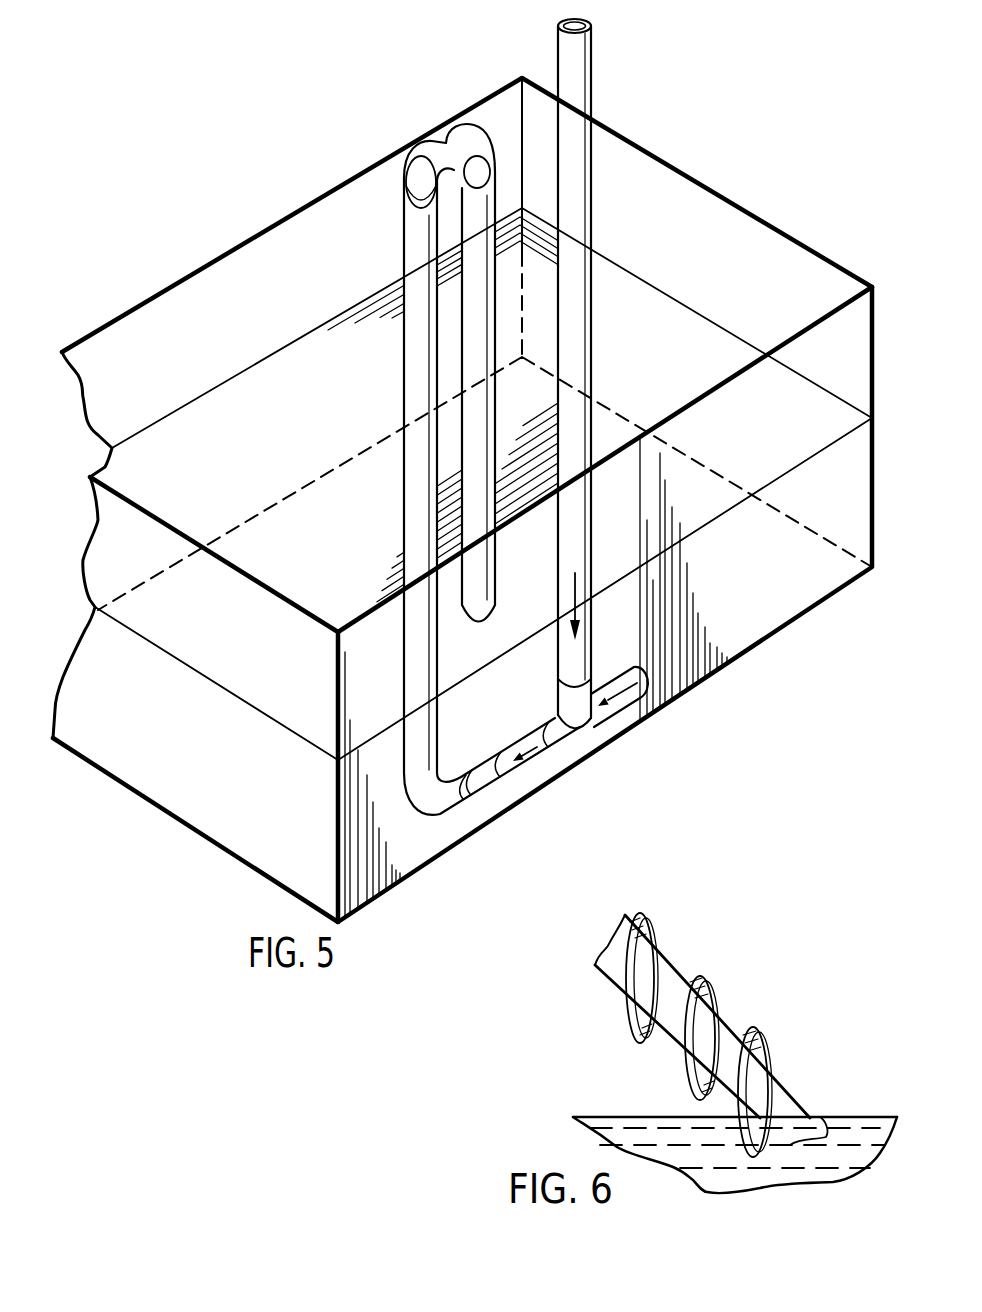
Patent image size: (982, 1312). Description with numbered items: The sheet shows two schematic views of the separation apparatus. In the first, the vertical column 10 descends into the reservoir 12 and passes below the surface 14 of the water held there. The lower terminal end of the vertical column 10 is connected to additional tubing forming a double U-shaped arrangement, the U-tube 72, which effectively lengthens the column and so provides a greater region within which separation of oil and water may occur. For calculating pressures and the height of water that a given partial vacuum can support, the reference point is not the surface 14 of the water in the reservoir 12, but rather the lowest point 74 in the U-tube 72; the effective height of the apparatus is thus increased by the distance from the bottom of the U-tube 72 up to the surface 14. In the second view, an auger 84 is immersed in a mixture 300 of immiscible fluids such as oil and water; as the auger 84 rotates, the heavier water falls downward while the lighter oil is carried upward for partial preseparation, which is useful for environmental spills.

In FIG. 5, the vertical column 10 is at (580, 65).
In FIG. 5, the reservoir 12 is at (718, 192).
In FIG. 5, the surface of the water 14 is at (698, 325).
In FIG. 5, the U-tube 72 is at (378, 398).
In FIG. 5, the lowest point 74 is at (565, 740).
In FIG. 6, the auger 84 is at (725, 1036).
In FIG. 6, the mixture 300 is at (850, 1137).